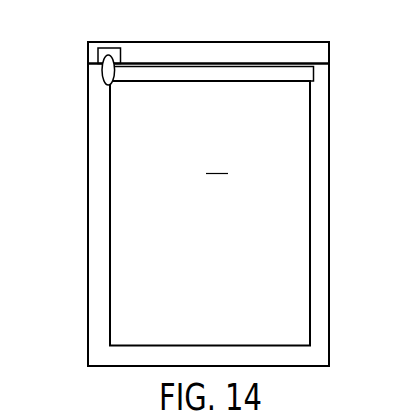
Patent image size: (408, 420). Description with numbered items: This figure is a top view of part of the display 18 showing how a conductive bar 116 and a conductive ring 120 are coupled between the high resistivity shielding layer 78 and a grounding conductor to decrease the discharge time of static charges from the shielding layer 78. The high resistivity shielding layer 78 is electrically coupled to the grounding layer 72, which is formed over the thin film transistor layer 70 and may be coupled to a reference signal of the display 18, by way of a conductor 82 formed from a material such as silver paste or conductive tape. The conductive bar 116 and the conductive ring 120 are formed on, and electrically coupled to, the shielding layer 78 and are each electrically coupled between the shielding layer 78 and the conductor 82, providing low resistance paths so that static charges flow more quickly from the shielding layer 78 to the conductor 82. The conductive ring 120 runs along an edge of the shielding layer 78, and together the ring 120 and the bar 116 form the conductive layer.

The display 18 is at (200, 184).
The thin film transistor (TFT) layer 70 is at (282, 52).
The grounding layer 72 is at (117, 47).
The high resistivity shielding layer 78 is at (210, 213).
The conductor 82 is at (100, 68).
The conductive bar 116 is at (198, 81).
The conductive ring 120 is at (320, 107).